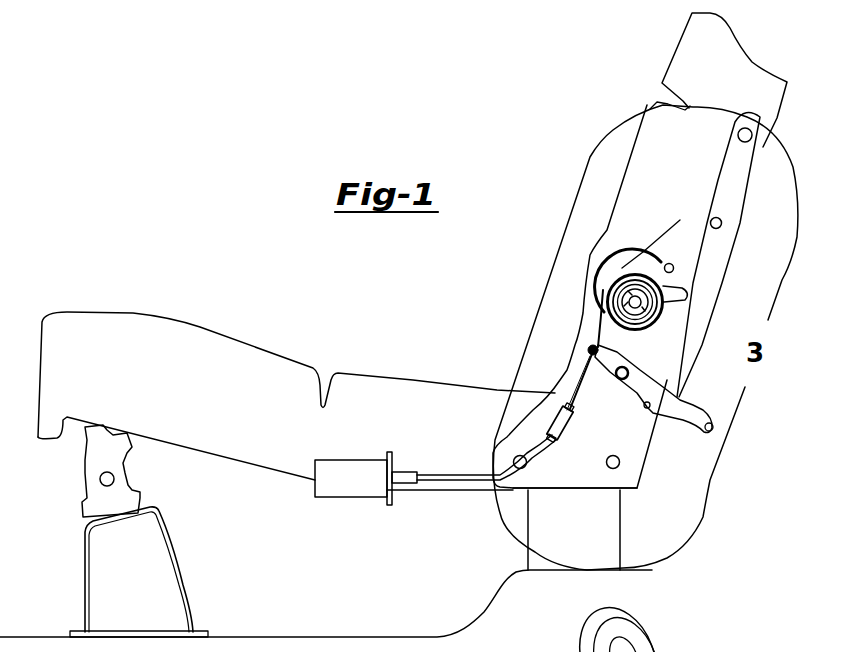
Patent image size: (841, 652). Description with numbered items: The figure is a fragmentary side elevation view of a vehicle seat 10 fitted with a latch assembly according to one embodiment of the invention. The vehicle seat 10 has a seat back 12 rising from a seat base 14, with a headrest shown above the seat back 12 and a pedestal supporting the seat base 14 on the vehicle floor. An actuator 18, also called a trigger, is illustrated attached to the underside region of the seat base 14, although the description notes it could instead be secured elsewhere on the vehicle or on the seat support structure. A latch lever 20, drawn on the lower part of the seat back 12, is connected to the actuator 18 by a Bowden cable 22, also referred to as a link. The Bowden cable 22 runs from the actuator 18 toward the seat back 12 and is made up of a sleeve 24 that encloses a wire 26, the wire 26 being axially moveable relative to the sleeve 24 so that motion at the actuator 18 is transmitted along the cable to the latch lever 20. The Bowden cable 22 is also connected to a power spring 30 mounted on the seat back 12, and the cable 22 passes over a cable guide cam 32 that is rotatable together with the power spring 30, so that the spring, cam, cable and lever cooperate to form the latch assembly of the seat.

The vehicle seat 10 is at (385, 323).
The seat back 12 is at (683, 56).
The seat base 14 is at (88, 327).
The actuator 18 is at (338, 488).
The latch lever 20 is at (657, 410).
The Bowden cable 22 is at (444, 473).
The sleeve 24 is at (548, 460).
The wire 26 is at (598, 337).
The power spring 30 is at (645, 327).
The cable guide cam 32 is at (690, 296).